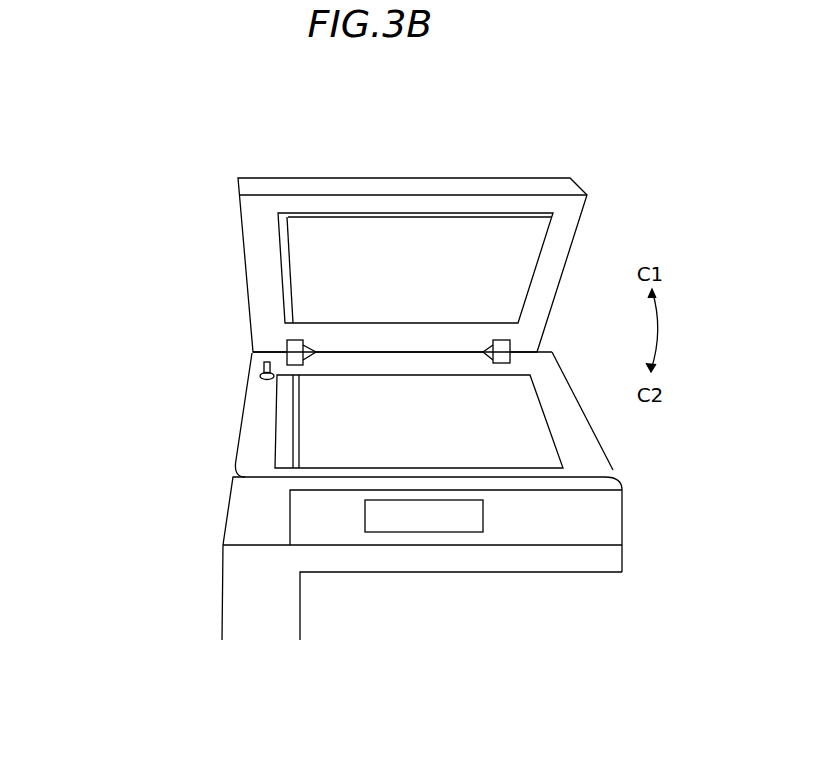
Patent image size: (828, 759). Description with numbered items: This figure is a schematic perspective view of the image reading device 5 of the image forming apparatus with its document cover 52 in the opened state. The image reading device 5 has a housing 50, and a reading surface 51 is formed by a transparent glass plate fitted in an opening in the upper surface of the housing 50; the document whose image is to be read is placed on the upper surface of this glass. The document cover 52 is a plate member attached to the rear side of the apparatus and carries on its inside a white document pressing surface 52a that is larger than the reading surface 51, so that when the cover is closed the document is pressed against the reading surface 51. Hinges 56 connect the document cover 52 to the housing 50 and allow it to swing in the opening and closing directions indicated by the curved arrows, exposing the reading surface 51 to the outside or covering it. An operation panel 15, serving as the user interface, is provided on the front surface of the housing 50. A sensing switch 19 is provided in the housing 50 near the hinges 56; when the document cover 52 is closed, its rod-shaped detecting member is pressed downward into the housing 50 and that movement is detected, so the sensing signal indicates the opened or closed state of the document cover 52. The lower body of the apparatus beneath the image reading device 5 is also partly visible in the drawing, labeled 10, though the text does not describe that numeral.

The image reading device 5 is at (116, 284).
The apparatus body 10 is at (237, 595).
The operation panel 15 is at (447, 522).
The sensing switch 19 is at (258, 366).
The housing 50 is at (603, 450).
The reading surface 51 is at (315, 437).
The document cover 52 is at (276, 170).
The document pressing surface 52a is at (471, 227).
The hinges 56 is at (292, 347).